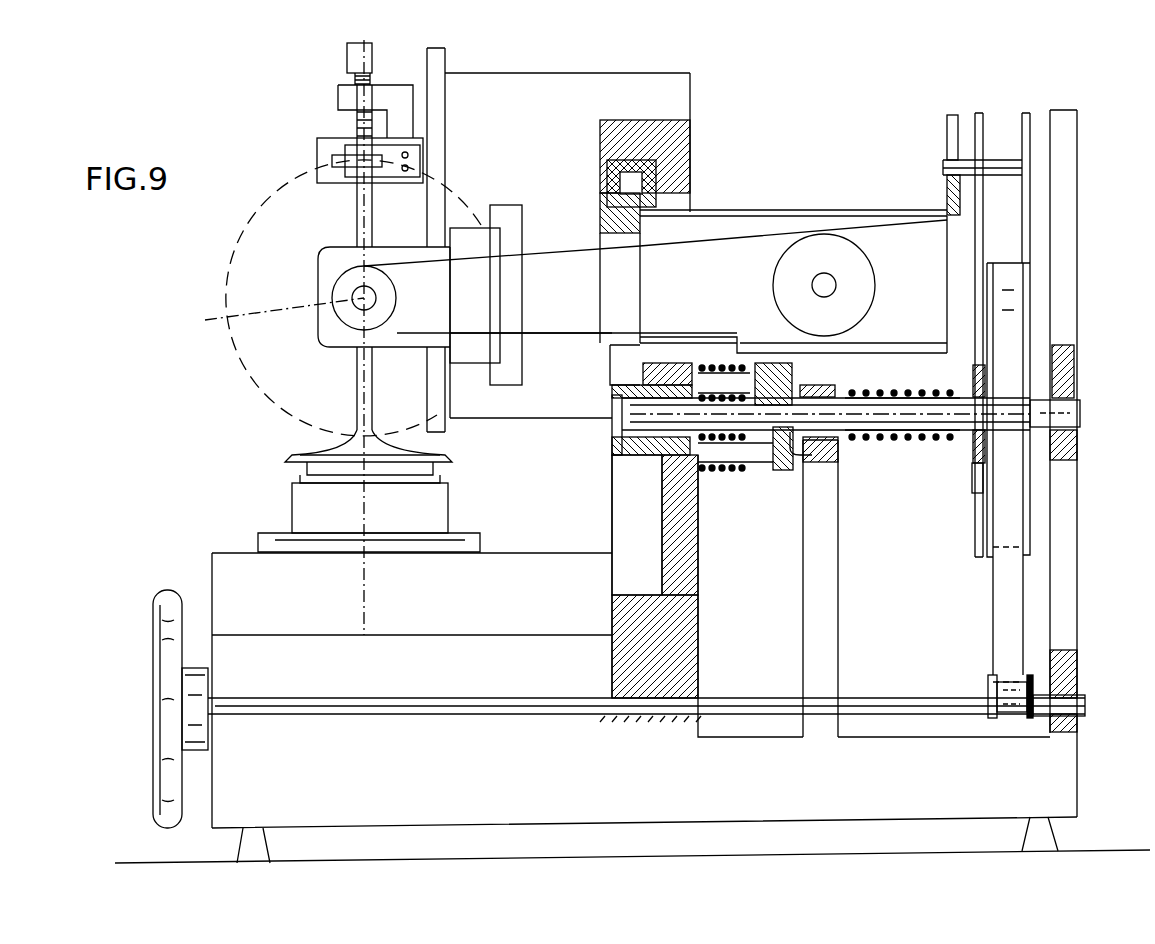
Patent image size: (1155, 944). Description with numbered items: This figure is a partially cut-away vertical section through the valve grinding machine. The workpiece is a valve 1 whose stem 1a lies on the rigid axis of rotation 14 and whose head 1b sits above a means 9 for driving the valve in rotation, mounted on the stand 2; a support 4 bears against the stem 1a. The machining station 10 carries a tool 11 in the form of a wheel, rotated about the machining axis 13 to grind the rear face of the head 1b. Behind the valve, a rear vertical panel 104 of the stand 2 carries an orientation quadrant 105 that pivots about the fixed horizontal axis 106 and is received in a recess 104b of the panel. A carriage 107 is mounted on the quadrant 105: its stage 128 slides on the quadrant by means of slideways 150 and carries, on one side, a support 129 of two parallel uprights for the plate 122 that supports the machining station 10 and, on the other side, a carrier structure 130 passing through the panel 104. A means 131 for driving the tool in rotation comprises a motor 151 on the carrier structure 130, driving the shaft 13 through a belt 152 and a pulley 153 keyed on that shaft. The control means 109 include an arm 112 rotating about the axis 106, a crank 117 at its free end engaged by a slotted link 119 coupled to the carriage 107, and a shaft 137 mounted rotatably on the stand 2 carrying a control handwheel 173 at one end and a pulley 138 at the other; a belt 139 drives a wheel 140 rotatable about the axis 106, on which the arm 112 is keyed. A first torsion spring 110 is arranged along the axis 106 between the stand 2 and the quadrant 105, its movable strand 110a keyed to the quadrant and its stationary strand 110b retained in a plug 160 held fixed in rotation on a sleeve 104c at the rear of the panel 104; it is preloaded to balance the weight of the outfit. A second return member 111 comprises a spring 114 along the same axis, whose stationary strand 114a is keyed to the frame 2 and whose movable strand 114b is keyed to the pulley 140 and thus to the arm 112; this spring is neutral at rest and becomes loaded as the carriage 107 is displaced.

The valve 1 is at (355, 215).
The stem 1a is at (355, 378).
The valve head 1b is at (305, 447).
The stand 2 is at (1008, 760).
The support 4 is at (325, 145).
The means for driving the valve in rotation 9 is at (308, 505).
The machining station 10 is at (330, 262).
The tool 11 is at (325, 337).
The machining axis 13 is at (355, 305).
The rigid axis of rotation 14 is at (347, 52).
The rear vertical panel 104 is at (690, 135).
The recess 104b is at (663, 582).
The sleeve 104c is at (722, 368).
The orientation quadrant 105 is at (690, 175).
The axis of orientation 106 is at (917, 418).
The carriage 107 is at (553, 245).
The control means 109 is at (452, 696).
The torsion spring 110 is at (726, 452).
The movable strand 110a is at (660, 457).
The stationary strand 110b is at (778, 457).
The second return member 111 is at (878, 447).
The arm 112 is at (1032, 206).
The second means for rotational return 114 is at (888, 395).
The stationary strand 114a is at (827, 467).
The movable strand 114b is at (967, 440).
The crank 117 is at (990, 158).
The slotted link 119 is at (948, 132).
The plate 122 is at (472, 350).
The stage 128 is at (583, 227).
The support 129 is at (530, 240).
The carrier structure 130 is at (745, 258).
The means for driving in rotation the machining tool 131 is at (805, 268).
The shaft 137 is at (457, 712).
The pulley 138 is at (1030, 680).
The belt 139 is at (1007, 572).
The wheel 140 is at (1025, 327).
The slideways 150 is at (637, 180).
The motor 151 is at (855, 260).
The belt 152 is at (560, 338).
The pulley 153 is at (333, 296).
The plug 160 is at (795, 378).
The control handwheel 173 is at (158, 643).